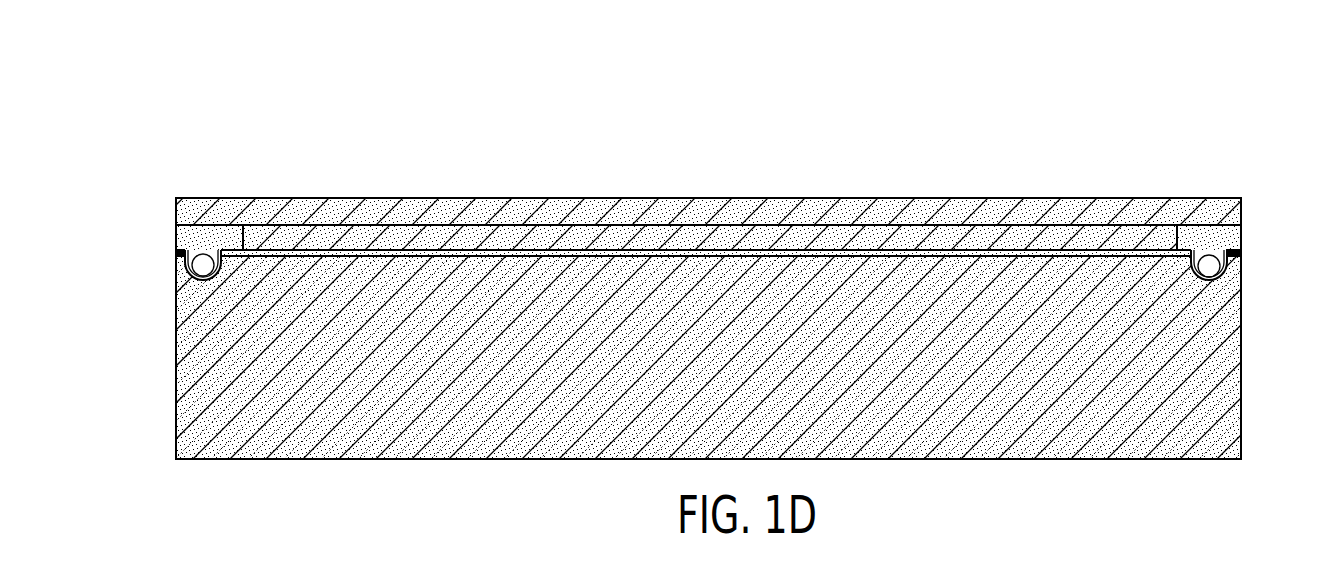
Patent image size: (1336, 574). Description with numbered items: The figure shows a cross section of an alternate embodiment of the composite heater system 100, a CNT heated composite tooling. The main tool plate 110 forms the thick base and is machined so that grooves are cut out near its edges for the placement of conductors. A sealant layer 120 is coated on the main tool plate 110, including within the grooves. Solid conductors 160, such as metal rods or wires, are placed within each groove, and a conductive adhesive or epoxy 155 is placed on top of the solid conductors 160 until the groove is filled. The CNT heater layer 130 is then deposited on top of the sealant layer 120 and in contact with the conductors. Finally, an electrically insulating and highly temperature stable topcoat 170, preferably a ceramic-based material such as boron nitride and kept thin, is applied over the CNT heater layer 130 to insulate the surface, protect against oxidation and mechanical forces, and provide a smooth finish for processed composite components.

The composite heater system 100 is at (290, 102).
The main tool plate 110 is at (1228, 413).
The sealant layer 120 is at (185, 257).
The CNT heater layer 130 is at (1025, 240).
The conductive adhesive or epoxy 155 is at (190, 240).
The solid conductors 160 is at (190, 265).
The topcoat 170 is at (710, 208).